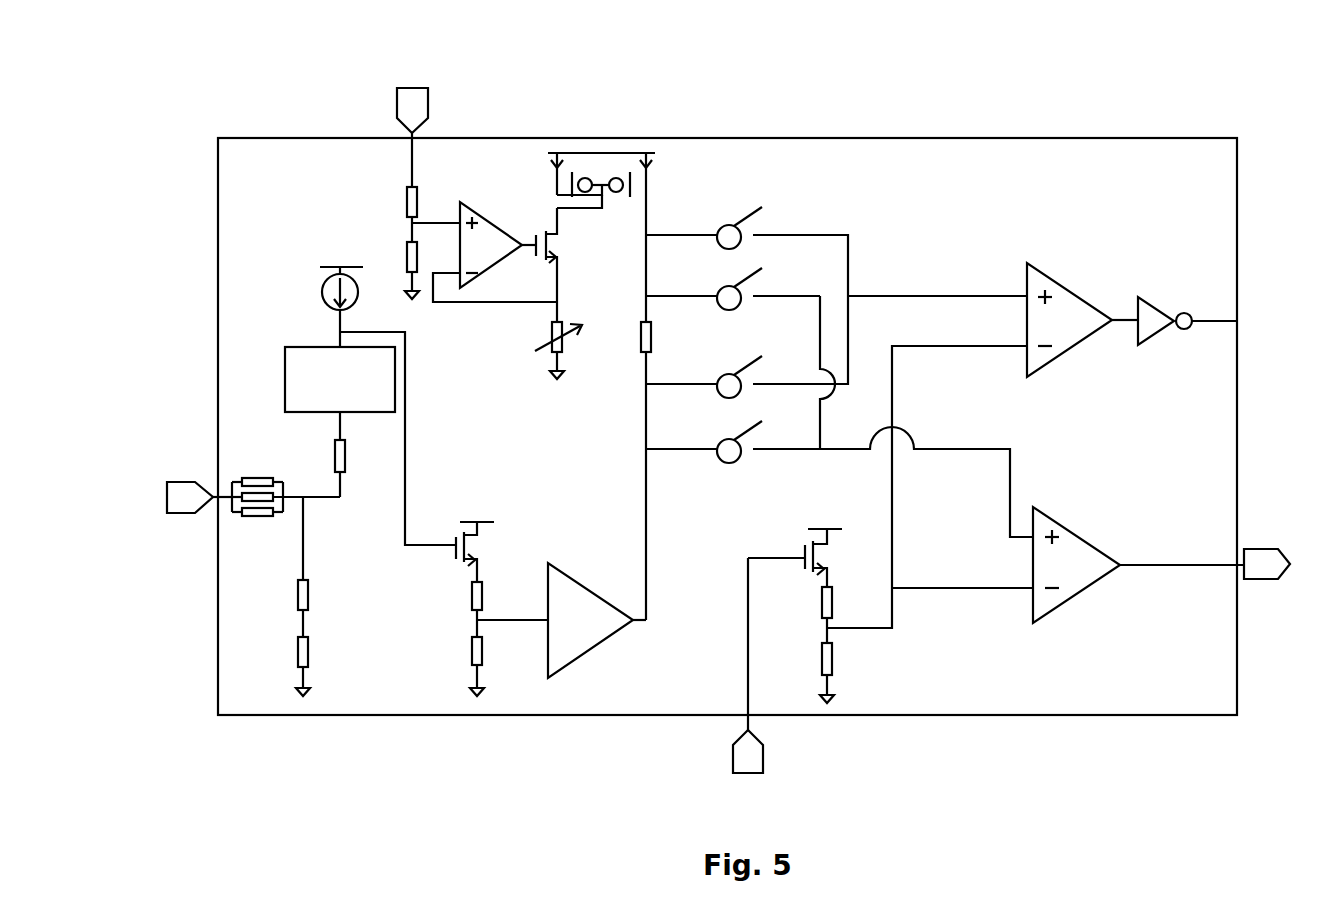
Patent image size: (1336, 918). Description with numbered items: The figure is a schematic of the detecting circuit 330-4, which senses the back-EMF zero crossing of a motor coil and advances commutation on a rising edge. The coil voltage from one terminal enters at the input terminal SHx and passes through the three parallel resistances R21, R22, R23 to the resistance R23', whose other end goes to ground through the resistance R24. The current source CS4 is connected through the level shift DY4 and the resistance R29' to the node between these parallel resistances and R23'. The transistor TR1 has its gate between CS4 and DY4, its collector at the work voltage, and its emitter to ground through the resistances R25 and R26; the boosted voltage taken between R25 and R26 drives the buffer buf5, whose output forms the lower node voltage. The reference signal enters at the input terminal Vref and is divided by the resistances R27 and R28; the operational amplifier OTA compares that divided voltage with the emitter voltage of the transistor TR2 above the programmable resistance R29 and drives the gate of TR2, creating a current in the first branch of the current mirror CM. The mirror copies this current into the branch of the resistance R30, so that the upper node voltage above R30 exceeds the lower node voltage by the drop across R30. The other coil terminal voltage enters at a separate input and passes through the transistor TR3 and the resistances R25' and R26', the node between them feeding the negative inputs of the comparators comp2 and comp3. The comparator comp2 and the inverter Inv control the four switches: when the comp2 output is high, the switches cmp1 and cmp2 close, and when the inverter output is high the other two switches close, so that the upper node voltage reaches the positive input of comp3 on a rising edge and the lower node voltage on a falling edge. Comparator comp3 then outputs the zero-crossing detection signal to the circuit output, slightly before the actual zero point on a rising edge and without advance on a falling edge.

The detecting circuit 330-4 is at (794, 84).
The input terminal Vref is at (386, 137).
The resistance R27 is at (414, 214).
The resistance R28 is at (394, 270).
The operational amplifier OTA is at (495, 252).
The transistor TR2 is at (564, 255).
The current mirror CM is at (593, 189).
The resistance R29 is at (546, 340).
The resistance R30 is at (628, 422).
The switch cmp1 is at (747, 295).
The switch cmp2 is at (839, 479).
The comparator comp2 is at (982, 445).
The inverter Inv is at (1187, 316).
The comparator comp3 is at (1101, 565).
The transistor TR3 is at (805, 546).
The resistance R25' is at (805, 615).
The resistance R26' is at (806, 673).
The current source CS4 is at (318, 302).
The level shift DY4 is at (370, 438).
The resistance R29' is at (361, 454).
The input terminal SHx is at (196, 487).
The resistance R21 is at (257, 461).
The resistance R22 is at (286, 468).
The resistance R23 is at (257, 487).
The resistance R23' is at (282, 567).
The resistance R24 is at (285, 666).
The transistor TR1 is at (484, 539).
The resistance R25 is at (491, 609).
The resistance R26 is at (459, 666).
The buffer buf5 is at (597, 620).